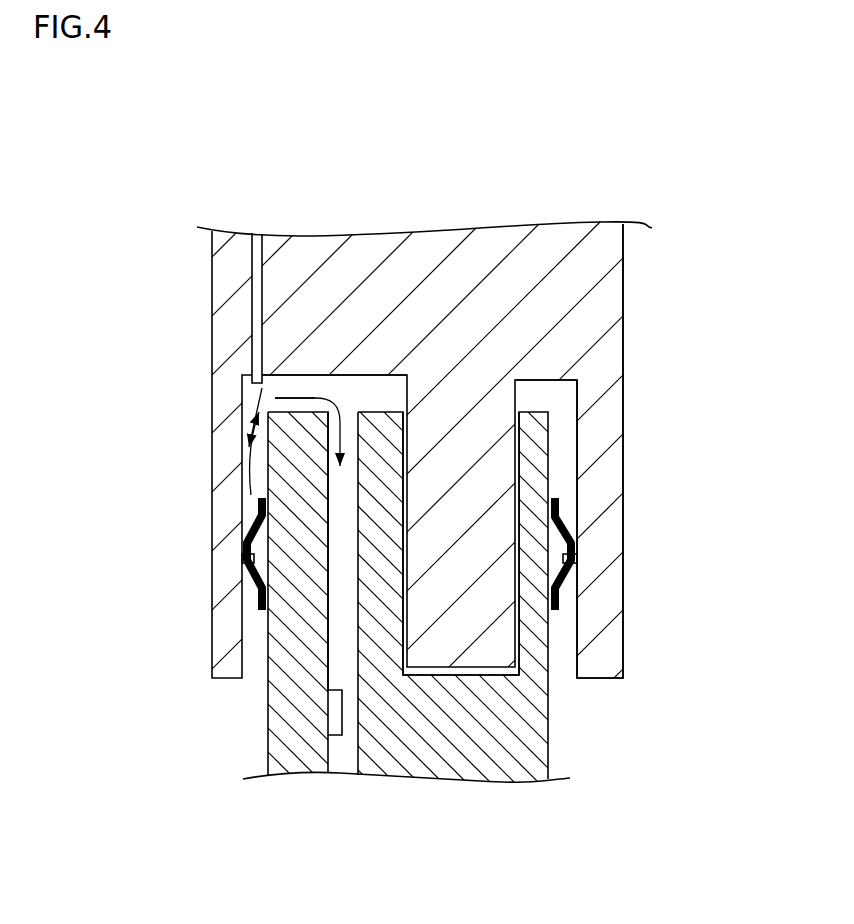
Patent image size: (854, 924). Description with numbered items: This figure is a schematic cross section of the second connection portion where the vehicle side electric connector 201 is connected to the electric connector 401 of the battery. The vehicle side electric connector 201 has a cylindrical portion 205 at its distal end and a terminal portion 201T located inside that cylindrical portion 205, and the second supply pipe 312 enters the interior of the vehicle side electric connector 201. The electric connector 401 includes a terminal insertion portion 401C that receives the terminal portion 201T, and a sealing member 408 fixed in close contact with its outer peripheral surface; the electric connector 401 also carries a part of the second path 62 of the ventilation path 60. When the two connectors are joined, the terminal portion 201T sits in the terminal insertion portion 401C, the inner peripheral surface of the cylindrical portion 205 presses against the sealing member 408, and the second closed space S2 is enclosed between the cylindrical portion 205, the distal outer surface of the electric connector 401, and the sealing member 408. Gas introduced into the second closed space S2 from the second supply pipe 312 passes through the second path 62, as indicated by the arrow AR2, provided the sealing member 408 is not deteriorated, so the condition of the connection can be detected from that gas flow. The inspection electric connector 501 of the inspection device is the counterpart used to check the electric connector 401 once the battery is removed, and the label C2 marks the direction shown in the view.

The vehicle side electric connector 201 is at (427, 435).
The second supply pipe 312 is at (252, 299).
The terminal portion 201T is at (518, 398).
The cylindrical portion 205 is at (625, 612).
The electric connector 401 is at (427, 647).
The terminal insertion portion 401C is at (518, 638).
The inspection electric connector 501 is at (343, 712).
The second path 62 is at (330, 614).
The ventilation path 60 is at (393, 653).
The sealing member 408 is at (557, 545).
The second closed space S2 is at (369, 390).
The arrow AR2 is at (316, 398).
The direction C2 is at (681, 398).